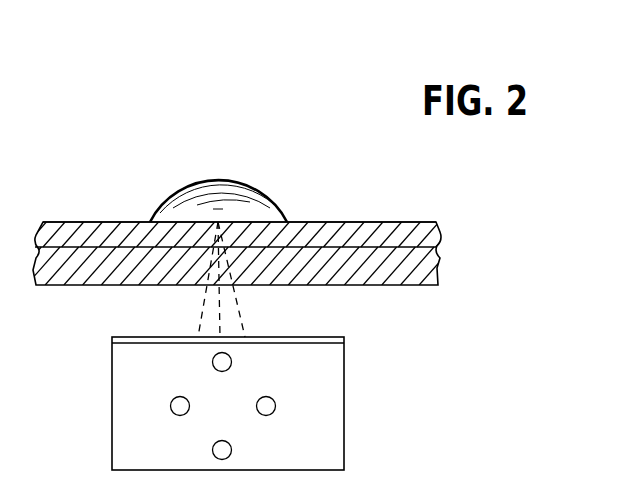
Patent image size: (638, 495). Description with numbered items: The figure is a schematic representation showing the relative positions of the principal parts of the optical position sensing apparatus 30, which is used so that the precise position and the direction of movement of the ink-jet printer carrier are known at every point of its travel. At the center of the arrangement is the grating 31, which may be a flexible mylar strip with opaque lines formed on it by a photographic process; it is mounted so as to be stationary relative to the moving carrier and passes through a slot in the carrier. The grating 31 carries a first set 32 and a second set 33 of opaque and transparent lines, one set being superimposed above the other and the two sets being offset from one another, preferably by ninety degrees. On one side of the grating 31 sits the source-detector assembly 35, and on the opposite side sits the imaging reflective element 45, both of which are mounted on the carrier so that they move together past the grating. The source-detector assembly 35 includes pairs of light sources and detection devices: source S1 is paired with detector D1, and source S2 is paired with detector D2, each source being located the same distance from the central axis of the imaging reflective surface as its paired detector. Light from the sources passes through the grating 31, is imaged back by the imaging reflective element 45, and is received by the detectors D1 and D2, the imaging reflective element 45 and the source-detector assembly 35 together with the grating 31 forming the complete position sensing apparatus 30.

The optical position sensing apparatus 30 is at (251, 211).
The grating 31 is at (70, 223).
The first set of opaque and transparent lines 32 is at (437, 232).
The second set of opaque and transparent lines 33 is at (438, 273).
The source-detector assembly 35 is at (252, 403).
The imaging reflective element 45 is at (240, 181).
The detector D1 is at (233, 362).
The detector D2 is at (281, 406).
The light source S1 is at (233, 450).
The light source S2 is at (165, 406).